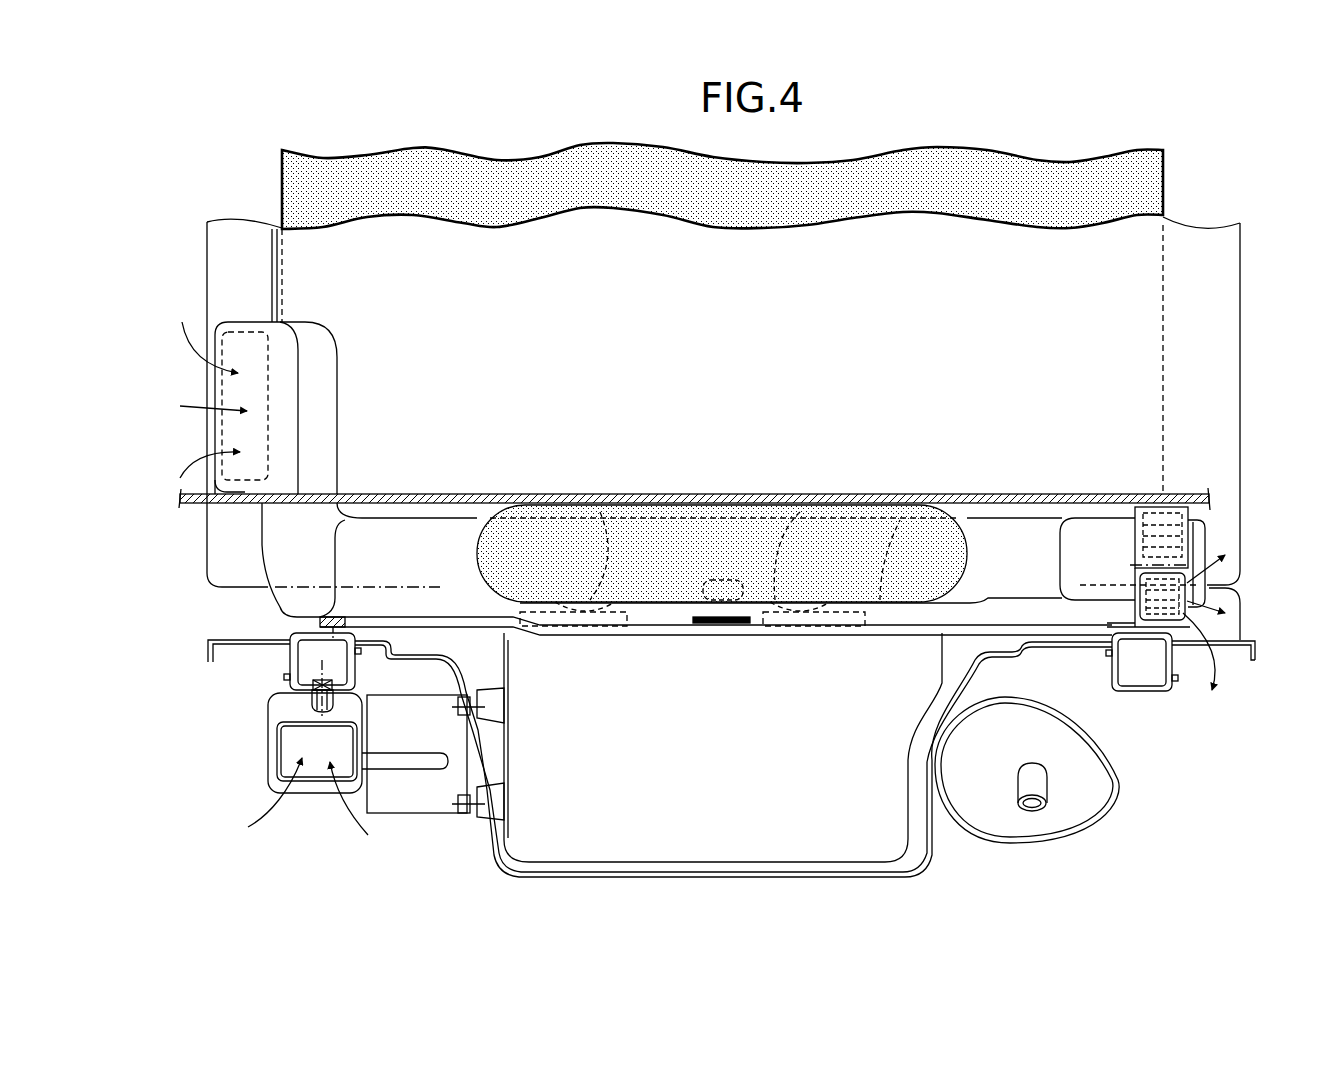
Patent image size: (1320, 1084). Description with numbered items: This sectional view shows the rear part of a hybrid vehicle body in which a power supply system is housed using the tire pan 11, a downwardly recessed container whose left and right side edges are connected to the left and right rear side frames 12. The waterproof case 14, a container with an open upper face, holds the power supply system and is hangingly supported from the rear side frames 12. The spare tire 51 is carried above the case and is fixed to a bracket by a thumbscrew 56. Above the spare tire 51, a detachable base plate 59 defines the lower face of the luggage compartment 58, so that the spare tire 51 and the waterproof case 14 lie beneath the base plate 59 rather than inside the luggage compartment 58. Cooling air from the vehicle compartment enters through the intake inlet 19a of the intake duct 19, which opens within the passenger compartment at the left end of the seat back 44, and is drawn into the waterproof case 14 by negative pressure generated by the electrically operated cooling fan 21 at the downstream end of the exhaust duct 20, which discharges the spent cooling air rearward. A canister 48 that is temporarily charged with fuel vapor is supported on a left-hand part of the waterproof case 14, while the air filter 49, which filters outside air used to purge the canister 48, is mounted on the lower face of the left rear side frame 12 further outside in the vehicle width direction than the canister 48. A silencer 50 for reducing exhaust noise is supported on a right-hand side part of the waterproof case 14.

The tire pan 11 is at (765, 878).
The rear side frame 12 is at (290, 667).
The waterproof case 14 is at (729, 756).
The intake duct 19 is at (318, 401).
The intake inlet 19a is at (247, 330).
The exhaust duct 20 is at (990, 530).
The cooling fan 21 is at (1177, 535).
The seat back 44 is at (840, 175).
The canister 48 is at (424, 746).
The air filter 49 is at (283, 714).
The silencer 50 is at (1003, 786).
The spare tire 51 is at (945, 560).
The thumbscrew 56 is at (712, 580).
The luggage compartment 58 is at (738, 376).
The base plate 59 is at (480, 492).